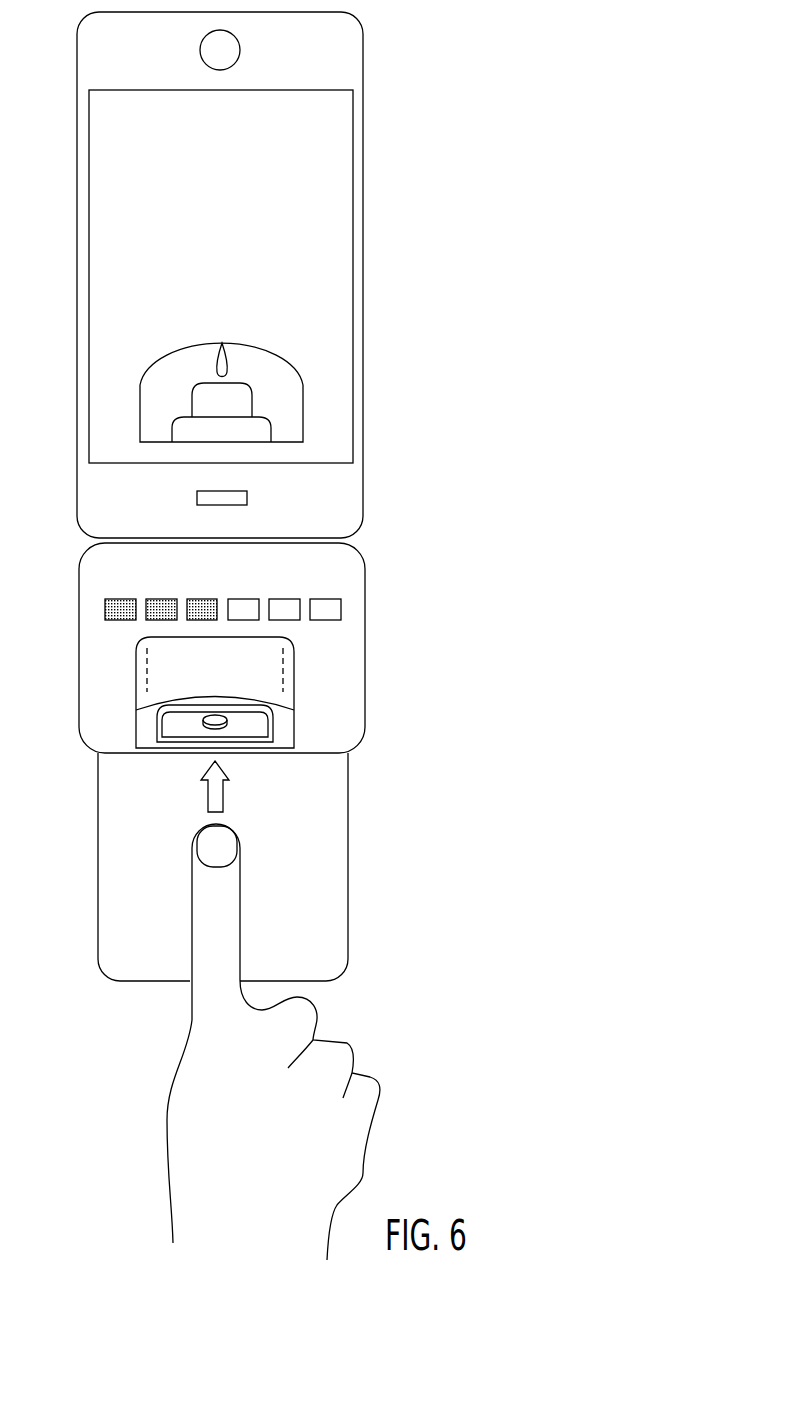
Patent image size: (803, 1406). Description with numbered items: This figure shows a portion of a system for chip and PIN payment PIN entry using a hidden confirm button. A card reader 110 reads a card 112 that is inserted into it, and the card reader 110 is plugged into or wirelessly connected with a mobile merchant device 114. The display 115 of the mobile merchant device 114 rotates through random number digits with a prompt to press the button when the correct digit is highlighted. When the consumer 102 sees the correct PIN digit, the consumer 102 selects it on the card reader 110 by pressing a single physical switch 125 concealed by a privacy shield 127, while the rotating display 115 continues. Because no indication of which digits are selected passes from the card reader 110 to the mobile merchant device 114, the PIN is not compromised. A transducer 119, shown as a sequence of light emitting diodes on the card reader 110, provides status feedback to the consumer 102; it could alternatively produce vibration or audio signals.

The consumer 102 is at (372, 1075).
The card reader 110 is at (79, 612).
The card 112 is at (318, 916).
The mobile merchant device 114 is at (365, 170).
The display 115 is at (337, 232).
The transducer 119 is at (330, 600).
The physical switch 125 is at (204, 728).
The privacy shield 127 is at (294, 685).